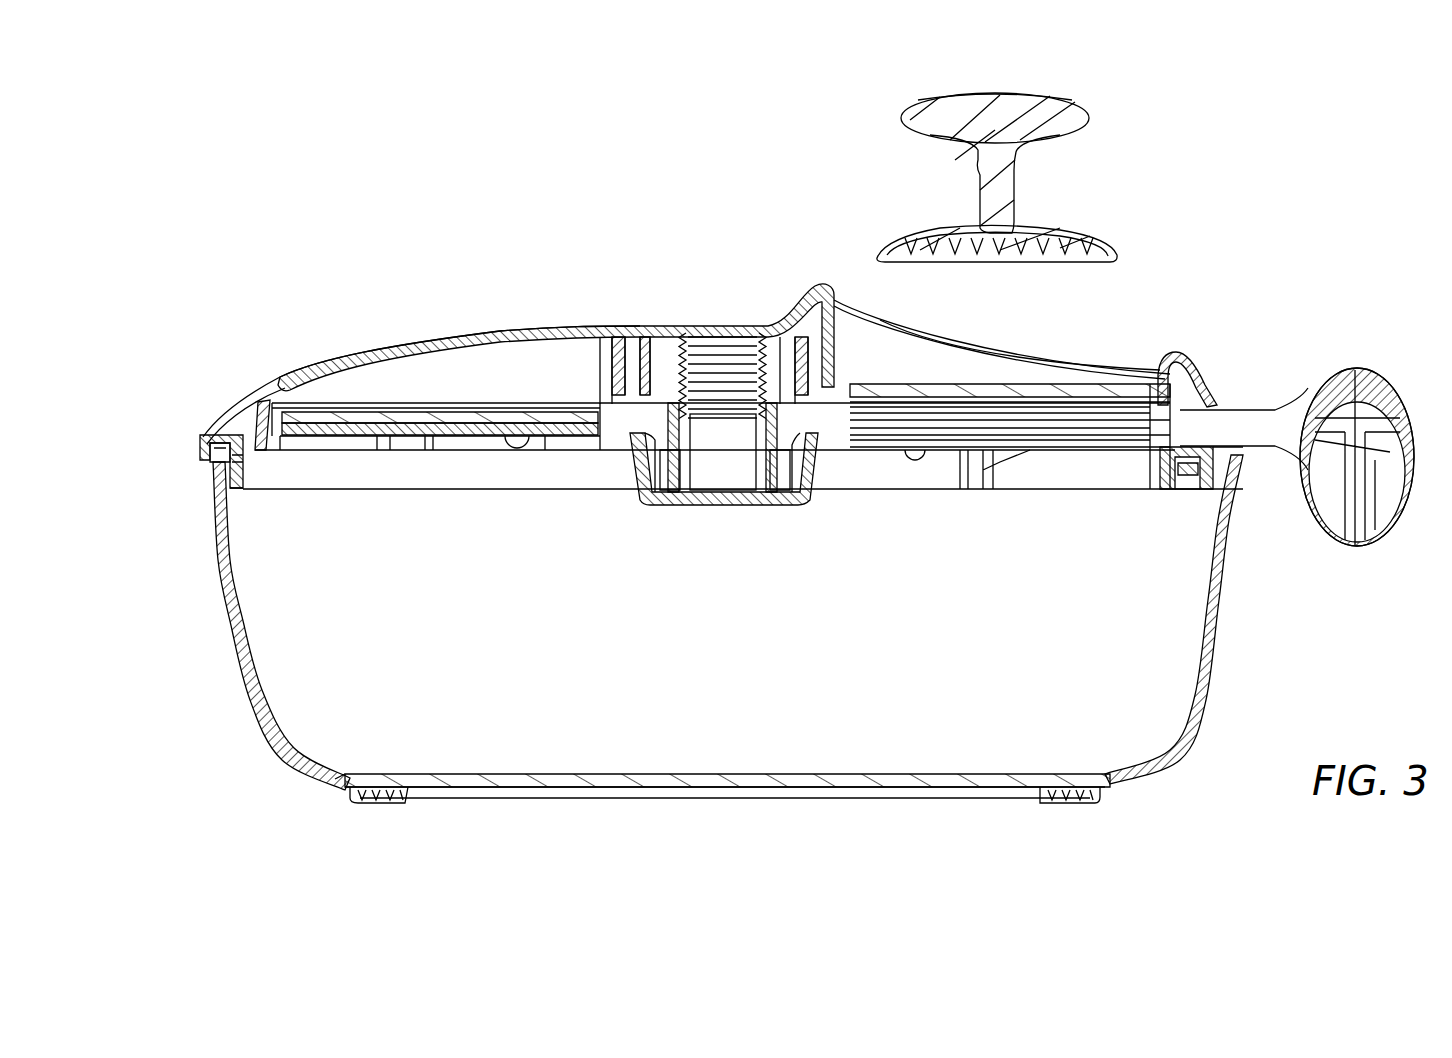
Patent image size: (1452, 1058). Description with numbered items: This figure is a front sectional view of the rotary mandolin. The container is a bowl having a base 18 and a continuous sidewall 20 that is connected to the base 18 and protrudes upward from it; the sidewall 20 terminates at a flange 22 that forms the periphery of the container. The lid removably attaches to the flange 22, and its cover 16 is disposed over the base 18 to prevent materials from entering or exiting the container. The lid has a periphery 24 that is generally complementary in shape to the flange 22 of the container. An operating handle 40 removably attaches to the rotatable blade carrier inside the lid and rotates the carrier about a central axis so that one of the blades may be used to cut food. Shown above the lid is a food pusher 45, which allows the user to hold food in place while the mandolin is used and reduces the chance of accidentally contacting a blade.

The cover 16 is at (437, 340).
The base 18 is at (945, 790).
The sidewall 20 is at (1210, 688).
The flange 22 is at (1243, 455).
The periphery 24 is at (200, 446).
The operating handle 40 is at (1370, 372).
The food pusher 45 is at (1060, 138).